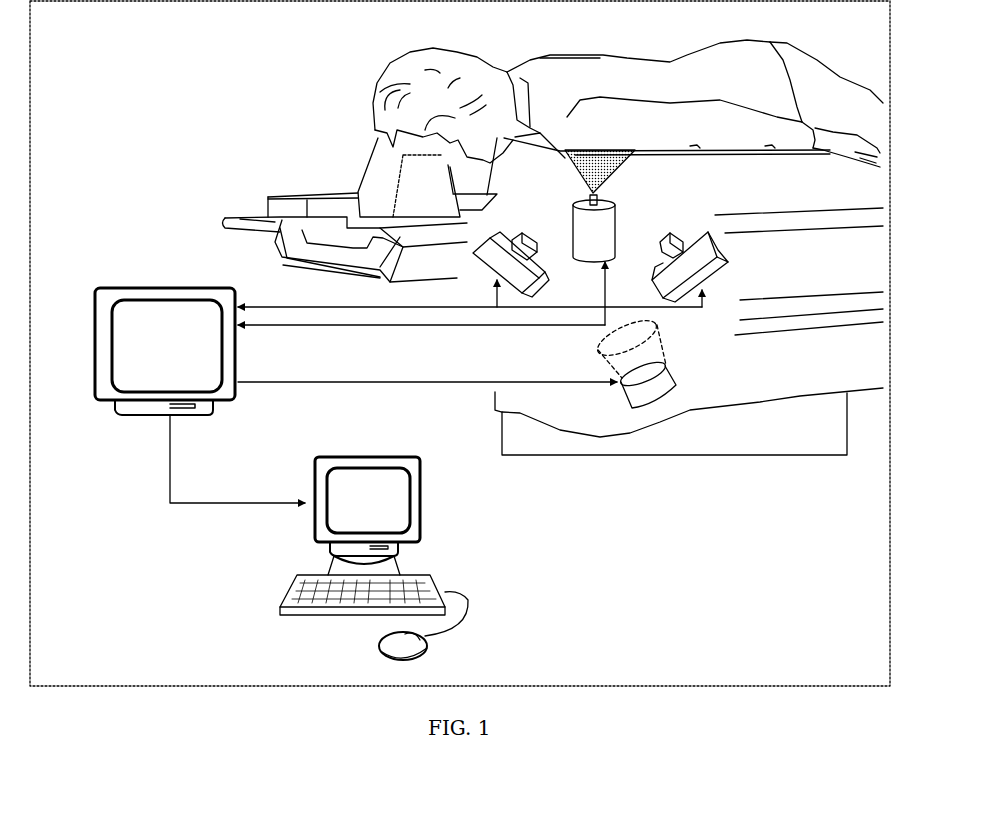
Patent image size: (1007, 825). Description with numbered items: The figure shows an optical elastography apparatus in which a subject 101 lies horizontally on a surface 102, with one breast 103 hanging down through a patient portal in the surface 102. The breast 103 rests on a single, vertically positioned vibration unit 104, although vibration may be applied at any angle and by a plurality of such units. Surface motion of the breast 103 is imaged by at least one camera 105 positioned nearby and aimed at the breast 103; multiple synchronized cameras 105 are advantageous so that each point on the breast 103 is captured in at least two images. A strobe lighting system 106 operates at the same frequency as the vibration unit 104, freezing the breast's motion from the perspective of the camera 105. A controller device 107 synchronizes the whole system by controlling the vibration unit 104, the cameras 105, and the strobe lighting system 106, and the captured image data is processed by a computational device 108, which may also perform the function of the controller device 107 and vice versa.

The subject 101 is at (603, 55).
The surface 102 is at (693, 155).
The breast 103 is at (630, 165).
The vibration unit 104 is at (573, 213).
The camera 105 is at (720, 258).
The strobe lighting system 106 is at (673, 370).
The controller device 107 is at (150, 287).
The computational device 108 is at (420, 512).